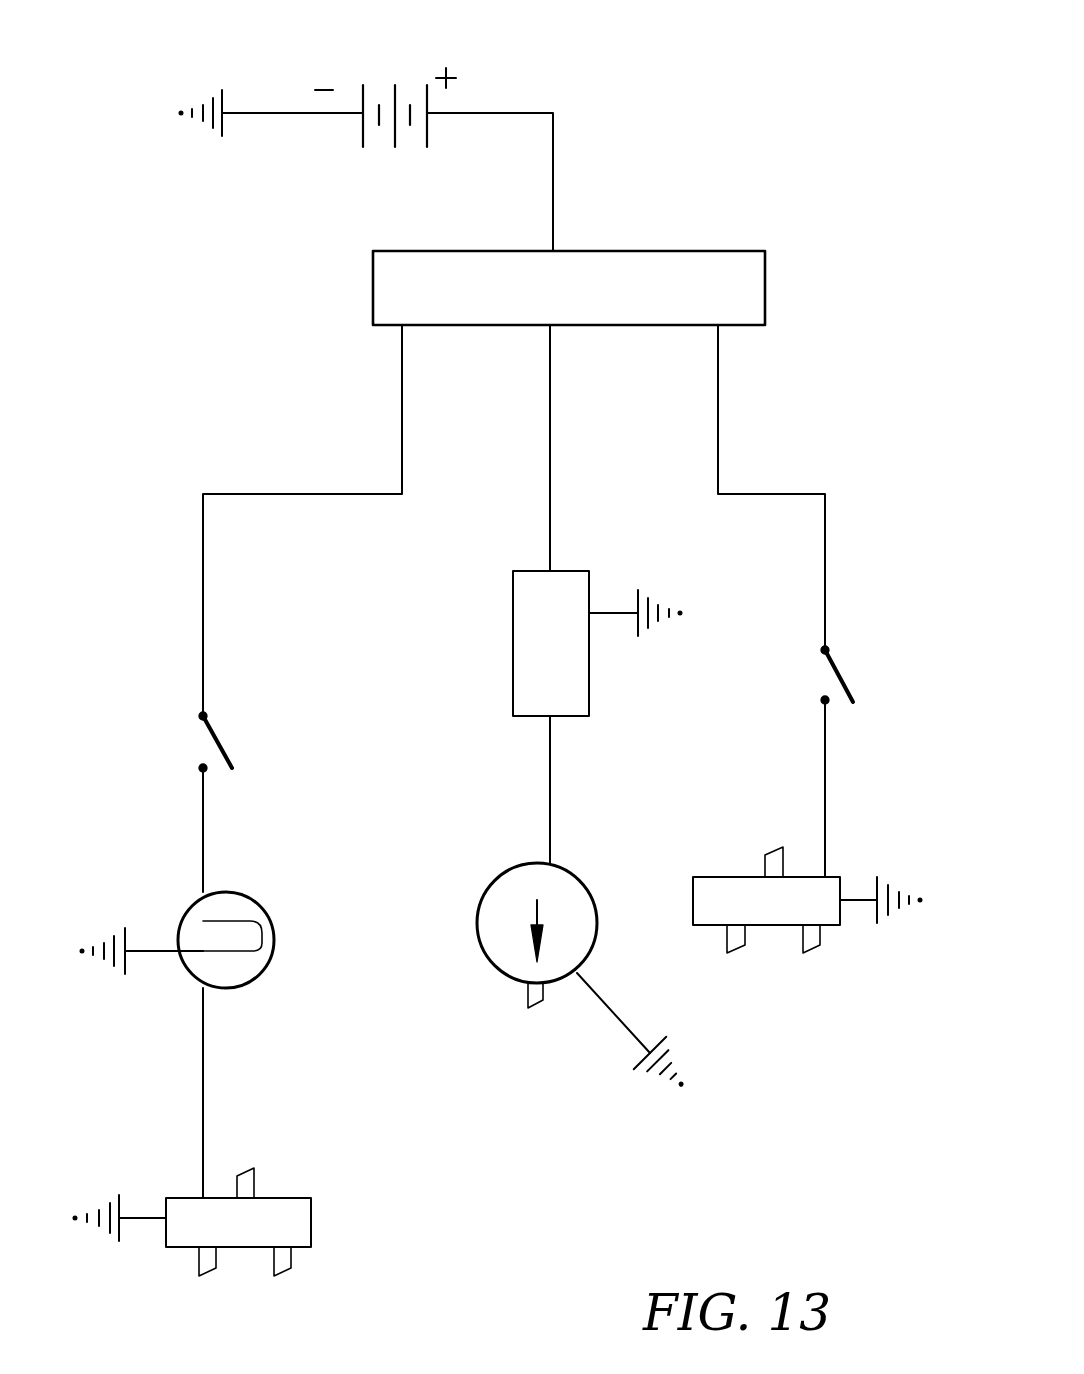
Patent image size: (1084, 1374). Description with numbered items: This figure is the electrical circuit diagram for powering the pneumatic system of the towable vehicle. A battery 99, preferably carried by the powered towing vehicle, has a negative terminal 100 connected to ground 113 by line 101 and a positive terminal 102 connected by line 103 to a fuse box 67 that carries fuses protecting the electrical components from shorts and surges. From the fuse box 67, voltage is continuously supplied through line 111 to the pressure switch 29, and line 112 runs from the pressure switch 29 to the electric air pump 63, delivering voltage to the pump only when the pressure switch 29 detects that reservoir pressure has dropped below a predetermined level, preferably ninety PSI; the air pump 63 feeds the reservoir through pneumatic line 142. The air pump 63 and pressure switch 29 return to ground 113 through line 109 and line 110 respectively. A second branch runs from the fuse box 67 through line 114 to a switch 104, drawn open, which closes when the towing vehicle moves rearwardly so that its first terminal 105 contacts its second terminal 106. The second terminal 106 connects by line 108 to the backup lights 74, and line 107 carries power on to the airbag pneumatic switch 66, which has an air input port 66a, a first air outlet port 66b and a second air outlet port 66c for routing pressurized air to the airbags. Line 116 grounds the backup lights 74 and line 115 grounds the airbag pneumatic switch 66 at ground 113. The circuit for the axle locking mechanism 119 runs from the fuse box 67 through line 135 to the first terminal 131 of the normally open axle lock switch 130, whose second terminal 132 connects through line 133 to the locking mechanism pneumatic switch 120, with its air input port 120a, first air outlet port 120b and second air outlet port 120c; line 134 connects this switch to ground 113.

The pressure switch 29 is at (530, 628).
The electric air pump 63 is at (498, 893).
The airbag pneumatic switch 66 is at (296, 1207).
The air input port 66a is at (252, 1185).
The first air outlet port 66b is at (285, 1262).
The second air outlet port 66c is at (200, 1262).
The fuse box 67 is at (655, 272).
The backup lights 74 is at (245, 972).
The battery 99 is at (383, 93).
The negative terminal 100 is at (347, 130).
The line 101 is at (272, 110).
The positive terminal 102 is at (428, 108).
The line 103 is at (553, 180).
The switch 104 is at (222, 745).
The first terminal 105 is at (200, 714).
The second terminal 106 is at (200, 768).
The line 107 is at (208, 1070).
The line 108 is at (205, 880).
The line 109 is at (620, 1010).
The line 110 is at (610, 613).
The line 111 is at (550, 467).
The line 112 is at (548, 768).
The ground 113 is at (200, 128).
The line 114 is at (230, 505).
The line 115 is at (140, 1218).
The line 116 is at (158, 955).
The axle locking mechanism 119 is at (862, 492).
The locking mechanism pneumatic switch 120 is at (720, 887).
The air input port 120a is at (770, 860).
The first air outlet port 120b is at (812, 940).
The second air outlet port 120c is at (730, 940).
The axle lock switch 130 is at (853, 690).
The first terminal 131 is at (827, 650).
The second terminal 132 is at (822, 700).
The line 133 is at (826, 790).
The line 134 is at (858, 893).
The line 135 is at (826, 527).
The pneumatic line 142 is at (530, 1000).